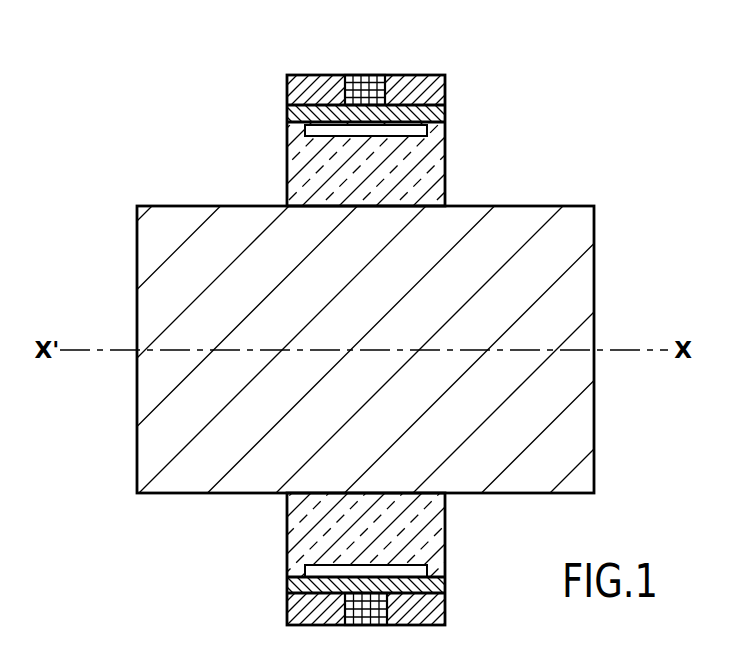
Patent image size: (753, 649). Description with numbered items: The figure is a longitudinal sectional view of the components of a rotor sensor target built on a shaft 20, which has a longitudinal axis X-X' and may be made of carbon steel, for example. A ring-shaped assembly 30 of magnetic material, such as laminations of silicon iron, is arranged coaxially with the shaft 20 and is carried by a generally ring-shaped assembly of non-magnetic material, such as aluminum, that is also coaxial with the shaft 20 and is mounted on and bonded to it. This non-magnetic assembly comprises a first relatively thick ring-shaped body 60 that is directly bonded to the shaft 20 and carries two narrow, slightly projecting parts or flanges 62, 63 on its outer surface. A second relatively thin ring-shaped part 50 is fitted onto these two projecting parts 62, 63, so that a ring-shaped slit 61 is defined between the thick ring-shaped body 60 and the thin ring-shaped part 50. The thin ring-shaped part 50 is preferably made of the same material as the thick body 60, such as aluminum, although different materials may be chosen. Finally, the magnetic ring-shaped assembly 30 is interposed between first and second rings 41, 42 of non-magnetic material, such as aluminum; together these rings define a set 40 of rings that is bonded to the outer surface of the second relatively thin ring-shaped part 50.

The shaft 20 is at (137, 252).
The ring-shaped assembly of magnetic material 30 is at (364, 91).
The set of rings 40 is at (376, 318).
The first ring 41 is at (311, 91).
The second ring 42 is at (412, 89).
The second relatively thin ring-shaped part 50 is at (287, 113).
The first relatively thick ring-shaped body 60 is at (430, 165).
The ring-shaped slit 61 is at (304, 140).
The narrow slightly projecting part 62 is at (302, 130).
The narrow slightly projecting part 63 is at (437, 128).